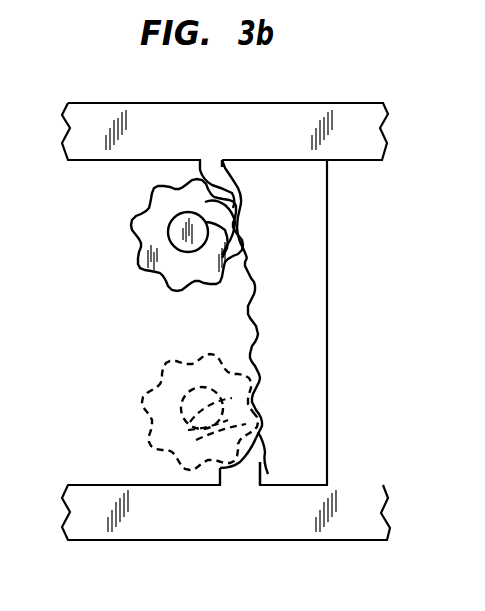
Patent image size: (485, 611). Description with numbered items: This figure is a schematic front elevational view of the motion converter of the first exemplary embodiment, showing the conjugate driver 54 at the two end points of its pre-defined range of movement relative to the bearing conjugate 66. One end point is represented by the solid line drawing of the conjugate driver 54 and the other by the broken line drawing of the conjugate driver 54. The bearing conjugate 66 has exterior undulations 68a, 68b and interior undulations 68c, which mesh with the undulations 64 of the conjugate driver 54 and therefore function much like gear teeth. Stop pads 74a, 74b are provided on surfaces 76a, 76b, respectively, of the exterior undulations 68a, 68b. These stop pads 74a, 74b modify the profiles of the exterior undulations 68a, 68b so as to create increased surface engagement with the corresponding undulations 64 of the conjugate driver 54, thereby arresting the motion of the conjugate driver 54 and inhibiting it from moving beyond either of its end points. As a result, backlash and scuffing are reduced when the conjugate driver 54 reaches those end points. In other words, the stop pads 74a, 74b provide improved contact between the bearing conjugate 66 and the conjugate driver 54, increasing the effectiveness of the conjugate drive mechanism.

The conjugate driver 54 is at (152, 233).
The undulations 64 is at (208, 190).
The bearing conjugate 66 is at (303, 282).
The exterior undulation 68a is at (240, 182).
The exterior undulation 68b is at (262, 442).
The interior undulations 68c is at (241, 217).
The stop pad 74a is at (210, 168).
The stop pad 74b is at (244, 478).
The surface 76a is at (223, 162).
The surface 76b is at (268, 474).